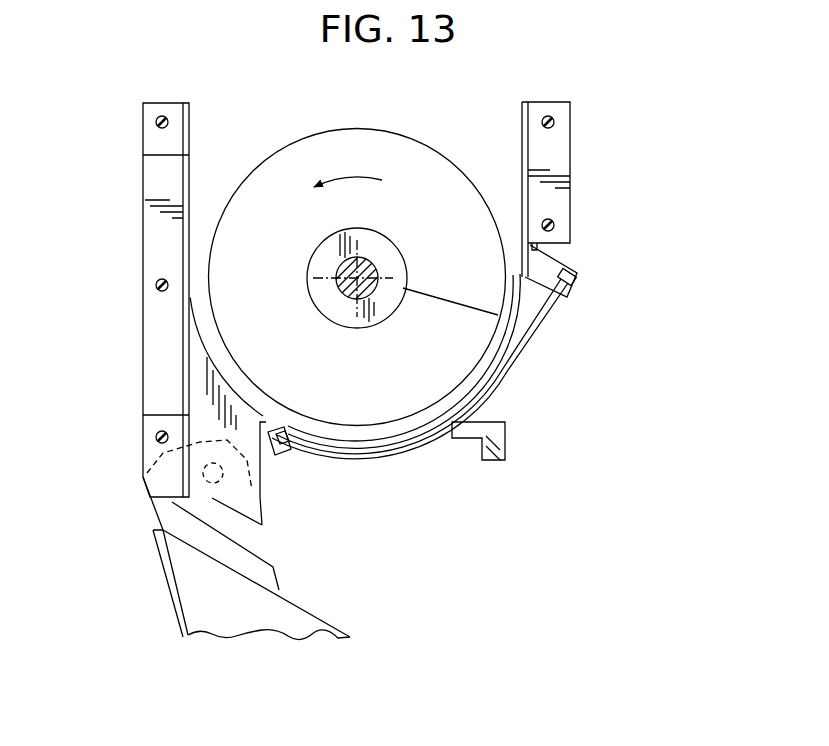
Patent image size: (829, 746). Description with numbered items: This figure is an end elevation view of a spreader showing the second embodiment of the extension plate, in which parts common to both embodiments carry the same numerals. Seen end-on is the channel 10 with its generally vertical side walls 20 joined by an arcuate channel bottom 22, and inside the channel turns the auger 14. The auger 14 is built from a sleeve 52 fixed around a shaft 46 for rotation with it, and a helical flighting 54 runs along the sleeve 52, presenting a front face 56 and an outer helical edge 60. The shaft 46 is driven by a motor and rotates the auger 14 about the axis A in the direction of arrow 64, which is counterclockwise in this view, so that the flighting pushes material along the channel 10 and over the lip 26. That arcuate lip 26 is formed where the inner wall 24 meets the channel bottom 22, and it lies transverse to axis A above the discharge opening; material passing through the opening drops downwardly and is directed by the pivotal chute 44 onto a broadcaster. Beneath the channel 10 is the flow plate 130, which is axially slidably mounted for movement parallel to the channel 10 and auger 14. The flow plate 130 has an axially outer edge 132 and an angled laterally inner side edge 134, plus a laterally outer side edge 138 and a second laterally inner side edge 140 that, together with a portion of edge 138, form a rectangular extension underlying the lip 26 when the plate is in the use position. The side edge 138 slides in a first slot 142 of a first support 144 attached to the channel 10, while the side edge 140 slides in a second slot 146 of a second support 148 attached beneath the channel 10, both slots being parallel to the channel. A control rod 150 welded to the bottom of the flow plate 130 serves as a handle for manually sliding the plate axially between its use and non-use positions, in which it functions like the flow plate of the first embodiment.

The channel 10 is at (195, 113).
The auger 14 is at (378, 131).
The side walls 20 is at (188, 157).
The channel bottom 22 is at (393, 437).
The inner wall 24 is at (203, 415).
The lip 26 is at (237, 390).
The pivotal chute 44 is at (288, 622).
The shaft 46 is at (338, 265).
The sleeve 52 is at (400, 247).
The helical flighting 54 is at (276, 150).
The front face 56 is at (448, 190).
The helical edge 60 is at (425, 147).
The arrow 64 is at (347, 177).
The axis A is at (357, 278).
The flow plate 130 is at (540, 348).
The axially outer edge 132 is at (520, 380).
The angled laterally inner side edge 134 is at (376, 458).
The laterally outer side edge 138 is at (580, 275).
The second laterally inner side edge 140 is at (281, 432).
The first slot 142 is at (585, 285).
The first support 144 is at (585, 280).
The second slot 146 is at (285, 436).
The second support 148 is at (281, 460).
The control rod 150 is at (480, 455).